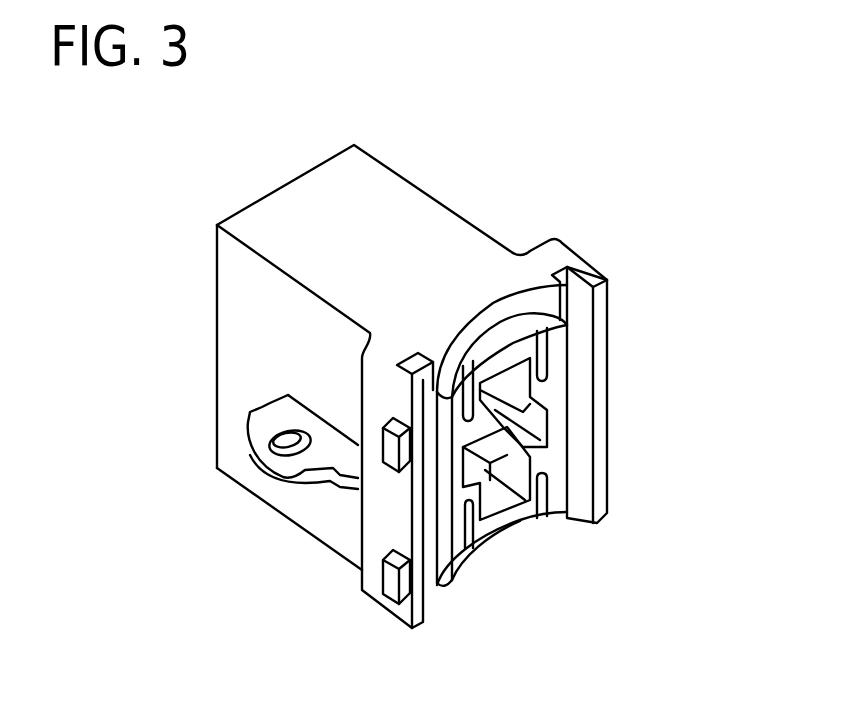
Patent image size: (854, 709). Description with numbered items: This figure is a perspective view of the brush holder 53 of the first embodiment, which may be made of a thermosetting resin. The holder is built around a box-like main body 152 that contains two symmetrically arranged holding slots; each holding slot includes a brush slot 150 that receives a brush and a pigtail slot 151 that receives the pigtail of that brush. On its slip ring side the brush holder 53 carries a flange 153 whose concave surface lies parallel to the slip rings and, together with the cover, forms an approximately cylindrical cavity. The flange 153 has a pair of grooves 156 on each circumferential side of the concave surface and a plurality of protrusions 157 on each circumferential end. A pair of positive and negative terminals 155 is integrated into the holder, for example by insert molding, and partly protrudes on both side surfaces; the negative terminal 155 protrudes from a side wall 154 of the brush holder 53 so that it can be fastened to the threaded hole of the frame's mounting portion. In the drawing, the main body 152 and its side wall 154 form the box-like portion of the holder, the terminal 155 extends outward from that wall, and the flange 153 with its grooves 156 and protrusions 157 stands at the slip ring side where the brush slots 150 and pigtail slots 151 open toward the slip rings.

The brush holder 53 is at (457, 162).
The brush slot 150 is at (523, 378).
The pigtail slot 151 is at (541, 415).
The main body 152 is at (317, 190).
The flange 153 is at (555, 258).
The side wall 154 is at (237, 332).
The terminal 155 is at (280, 458).
The groove 156 is at (583, 302).
The protrusion 157 is at (387, 578).